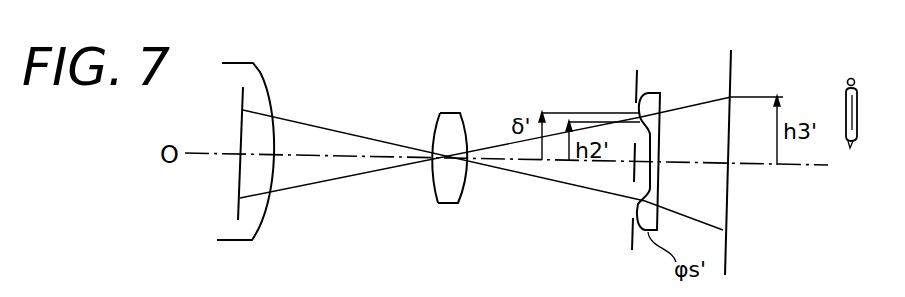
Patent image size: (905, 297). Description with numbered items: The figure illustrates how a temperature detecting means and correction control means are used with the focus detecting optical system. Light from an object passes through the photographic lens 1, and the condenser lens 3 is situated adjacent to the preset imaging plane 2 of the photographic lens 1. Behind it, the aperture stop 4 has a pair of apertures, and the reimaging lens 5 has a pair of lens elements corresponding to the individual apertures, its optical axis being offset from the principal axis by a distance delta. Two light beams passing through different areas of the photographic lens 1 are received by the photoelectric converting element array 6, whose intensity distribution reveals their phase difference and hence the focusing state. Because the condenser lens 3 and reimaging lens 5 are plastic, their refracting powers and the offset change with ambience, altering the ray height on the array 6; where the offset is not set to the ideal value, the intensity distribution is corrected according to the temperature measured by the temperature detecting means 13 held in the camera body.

The photographic lens 1 is at (262, 80).
The preset imaging plane 2 is at (447, 162).
The condenser lens 3 is at (437, 127).
The aperture stop 4 is at (635, 82).
The reimaging lens 5 is at (652, 96).
The photoelectric converting element array 6 is at (733, 68).
The temperature detecting means 13 is at (856, 146).